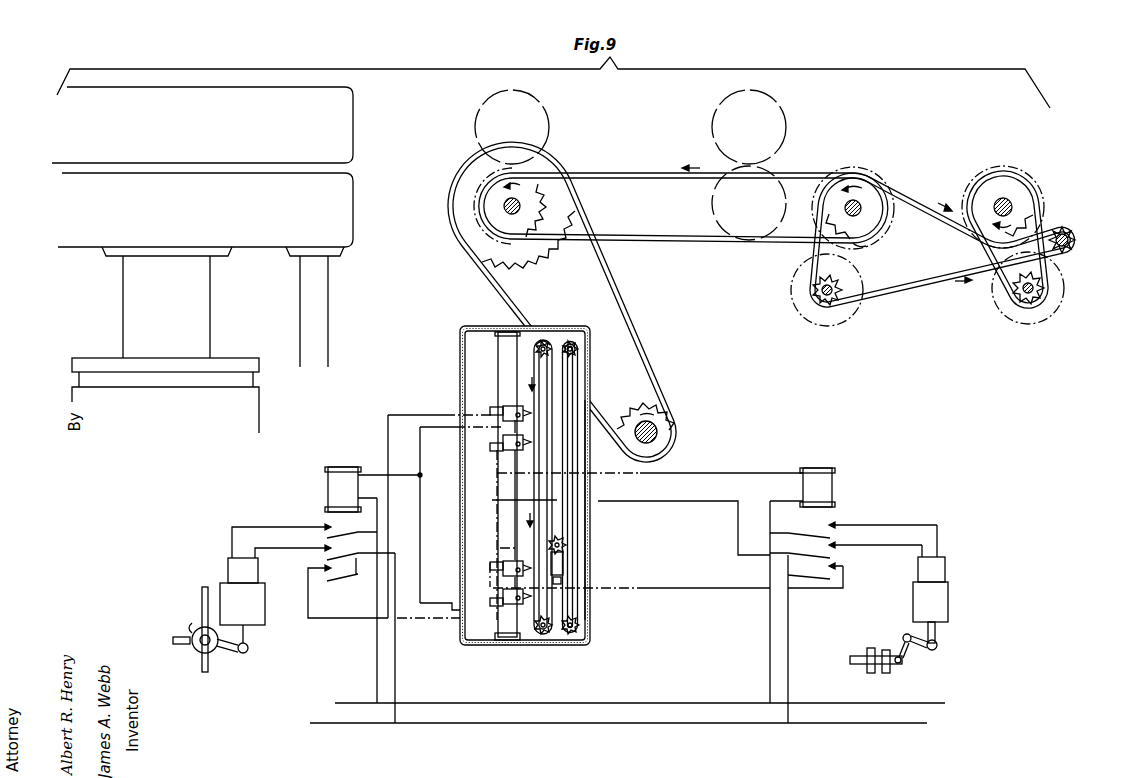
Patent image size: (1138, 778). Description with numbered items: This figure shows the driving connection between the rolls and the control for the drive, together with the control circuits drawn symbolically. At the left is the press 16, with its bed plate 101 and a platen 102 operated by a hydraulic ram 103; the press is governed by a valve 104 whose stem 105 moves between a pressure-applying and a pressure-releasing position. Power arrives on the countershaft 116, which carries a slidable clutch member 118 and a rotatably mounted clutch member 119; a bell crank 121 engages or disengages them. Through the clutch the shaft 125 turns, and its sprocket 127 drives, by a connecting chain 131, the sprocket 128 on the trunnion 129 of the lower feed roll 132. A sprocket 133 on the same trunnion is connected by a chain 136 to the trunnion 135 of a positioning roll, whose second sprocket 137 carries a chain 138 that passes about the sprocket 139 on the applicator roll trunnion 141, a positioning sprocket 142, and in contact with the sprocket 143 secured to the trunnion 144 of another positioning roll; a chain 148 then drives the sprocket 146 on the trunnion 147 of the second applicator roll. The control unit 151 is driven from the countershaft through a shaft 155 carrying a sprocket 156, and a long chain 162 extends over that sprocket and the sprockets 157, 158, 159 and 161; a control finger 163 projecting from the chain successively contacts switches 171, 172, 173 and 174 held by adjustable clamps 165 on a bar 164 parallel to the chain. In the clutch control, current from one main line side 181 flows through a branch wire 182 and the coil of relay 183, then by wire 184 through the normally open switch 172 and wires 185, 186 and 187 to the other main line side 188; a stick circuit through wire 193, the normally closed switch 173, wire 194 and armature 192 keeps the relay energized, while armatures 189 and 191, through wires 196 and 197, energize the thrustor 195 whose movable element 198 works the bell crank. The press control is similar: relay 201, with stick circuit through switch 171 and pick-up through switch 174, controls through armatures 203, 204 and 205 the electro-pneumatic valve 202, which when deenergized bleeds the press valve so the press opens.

The press 16 is at (146, 87).
The bed plate 101 is at (202, 125).
The platen 102 is at (205, 270).
The hydraulic ram 103 is at (165, 395).
The valve 104 is at (197, 650).
The stem 105 is at (195, 632).
The countershaft 116 is at (460, 366).
The clutch member 118 is at (885, 675).
The clutch member 119 is at (865, 675).
The bell crank 121 is at (913, 650).
The shaft 125 is at (657, 427).
The sprocket 127 is at (667, 437).
The sprocket 128 is at (541, 264).
The trunnion 129 is at (518, 206).
The connecting chain 131 is at (641, 347).
The lower feed roll 132 is at (556, 197).
The sprocket 133 is at (530, 215).
The trunnion 135 is at (860, 215).
The chain 136 is at (707, 244).
The second sprocket 137 is at (855, 243).
The chain 138 is at (898, 288).
The sprocket 139 is at (832, 298).
The trunnion 141 is at (825, 300).
The positioning sprocket 142 is at (1070, 228).
The sprocket 143 is at (1023, 193).
The trunnion 144 is at (1003, 200).
The sprocket 146 is at (1012, 298).
The trunnion 147 is at (1043, 310).
The chain 148 is at (1045, 282).
The control unit 151 is at (438, 388).
The shaft 155 is at (541, 338).
The sprocket 156 is at (497, 326).
The sprocket 157 is at (543, 633).
The sprocket 158 is at (580, 625).
The sprocket 159 is at (578, 347).
The sprocket 161 is at (562, 540).
The chain 162 is at (583, 455).
The control finger 163 is at (530, 425).
The bar 164 is at (498, 345).
The clamps 165 is at (506, 398).
The switch 171 is at (497, 409).
The switch 172 is at (497, 447).
The switch 173 is at (497, 563).
The switch 174 is at (497, 603).
The main line side 181 is at (710, 703).
The branch wire 182 is at (770, 617).
The relay 183 is at (835, 475).
The wire 184 is at (770, 473).
The wire 185 is at (492, 493).
The wire 186 is at (720, 501).
The wire 187 is at (790, 615).
The main line side 188 is at (708, 723).
The armature 189 is at (818, 532).
The armature 191 is at (809, 554).
The armature 192 is at (818, 576).
The wire 193 is at (516, 511).
The wire 194 is at (665, 588).
The thrustor 195 is at (948, 587).
The wire 196 is at (914, 522).
The wire 197 is at (888, 545).
The movable element 198 is at (940, 640).
The relay 201 is at (328, 485).
The electro-pneumatic valve 202 is at (265, 600).
The armature 203 is at (341, 535).
The armature 204 is at (340, 556).
The armature 205 is at (336, 583).